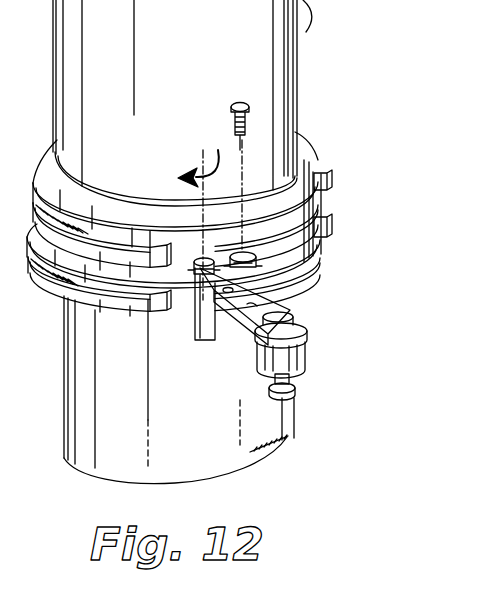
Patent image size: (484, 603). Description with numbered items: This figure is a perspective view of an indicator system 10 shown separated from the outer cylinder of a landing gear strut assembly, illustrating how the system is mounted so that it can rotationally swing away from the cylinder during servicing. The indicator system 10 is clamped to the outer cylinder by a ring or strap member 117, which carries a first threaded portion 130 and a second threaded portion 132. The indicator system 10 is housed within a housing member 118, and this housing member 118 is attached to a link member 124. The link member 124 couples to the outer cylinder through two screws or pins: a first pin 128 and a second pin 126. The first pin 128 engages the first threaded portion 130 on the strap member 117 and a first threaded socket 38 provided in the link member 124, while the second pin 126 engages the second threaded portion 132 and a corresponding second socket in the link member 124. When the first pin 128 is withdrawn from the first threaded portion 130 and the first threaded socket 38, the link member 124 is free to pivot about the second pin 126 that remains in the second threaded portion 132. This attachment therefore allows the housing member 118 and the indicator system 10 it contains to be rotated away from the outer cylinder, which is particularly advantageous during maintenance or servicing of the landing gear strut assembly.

The indicator system 10 is at (305, 313).
The first threaded socket 38 is at (204, 300).
The ring or strap member 117 is at (328, 210).
The housing member 118 is at (306, 355).
The link member 124 is at (240, 310).
The second pin 126 is at (176, 252).
The first pin 128 is at (232, 106).
The first threaded portion 130 is at (302, 266).
The second threaded portion 132 is at (196, 268).